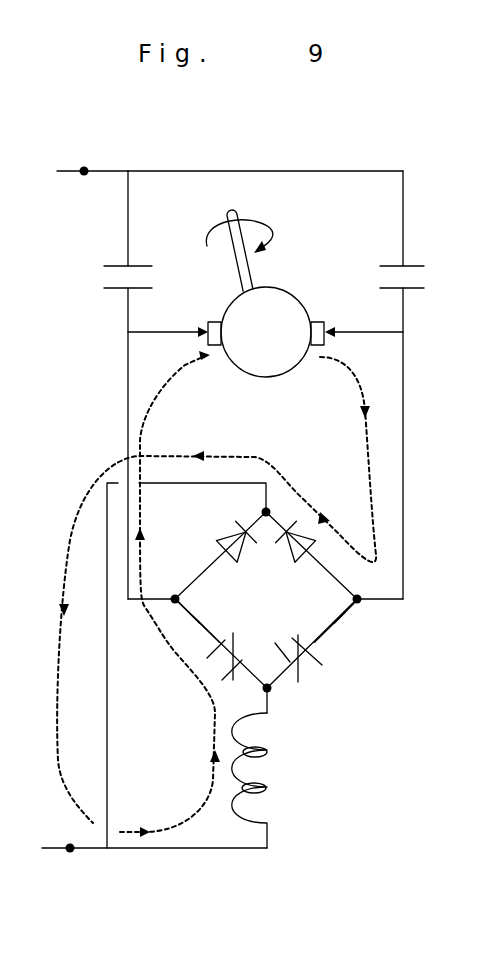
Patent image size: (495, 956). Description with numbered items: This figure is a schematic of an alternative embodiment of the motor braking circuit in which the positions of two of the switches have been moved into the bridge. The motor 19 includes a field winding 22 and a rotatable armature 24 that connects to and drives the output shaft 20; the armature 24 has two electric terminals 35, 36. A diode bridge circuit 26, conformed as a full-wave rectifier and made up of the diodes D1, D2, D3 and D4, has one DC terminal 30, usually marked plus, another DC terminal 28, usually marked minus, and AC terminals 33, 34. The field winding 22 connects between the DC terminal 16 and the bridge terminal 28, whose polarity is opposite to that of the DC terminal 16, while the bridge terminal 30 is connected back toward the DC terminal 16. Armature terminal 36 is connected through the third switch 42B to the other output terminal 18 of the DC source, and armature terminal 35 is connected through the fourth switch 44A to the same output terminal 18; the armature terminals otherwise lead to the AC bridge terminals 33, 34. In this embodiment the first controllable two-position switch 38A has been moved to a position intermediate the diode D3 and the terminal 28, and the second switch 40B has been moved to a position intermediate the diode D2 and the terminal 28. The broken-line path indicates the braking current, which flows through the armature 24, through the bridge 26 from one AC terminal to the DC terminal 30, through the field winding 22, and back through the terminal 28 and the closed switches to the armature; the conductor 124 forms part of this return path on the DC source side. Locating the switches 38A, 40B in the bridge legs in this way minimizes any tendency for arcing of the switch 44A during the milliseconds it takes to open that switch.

The output terminal of the DC source 18 is at (82, 170).
The DC terminal 16 is at (72, 852).
The return conductor 124 is at (107, 753).
The fourth switch 44A is at (143, 264).
The third switch 42B is at (421, 265).
The output shaft 20 is at (257, 285).
The rotatable armature 24 is at (265, 380).
The electric terminal of the armature 35 is at (206, 329).
The electric terminal of the armature 36 is at (328, 328).
The motor 19 is at (287, 443).
The DC terminal of the bridge 30 is at (268, 511).
The diode bridge circuit 26 is at (287, 575).
The diode D1 is at (316, 534).
The diode D2 is at (338, 634).
The diode D3 is at (203, 609).
The diode D4 is at (231, 530).
The AC terminal of the bridge 33 is at (172, 603).
The AC terminal of the bridge 34 is at (360, 603).
The first controllable two-position switch 38A is at (272, 636).
The second switch 40B is at (321, 665).
The DC terminal of the bridge 28 is at (270, 692).
The field winding 22 is at (266, 788).